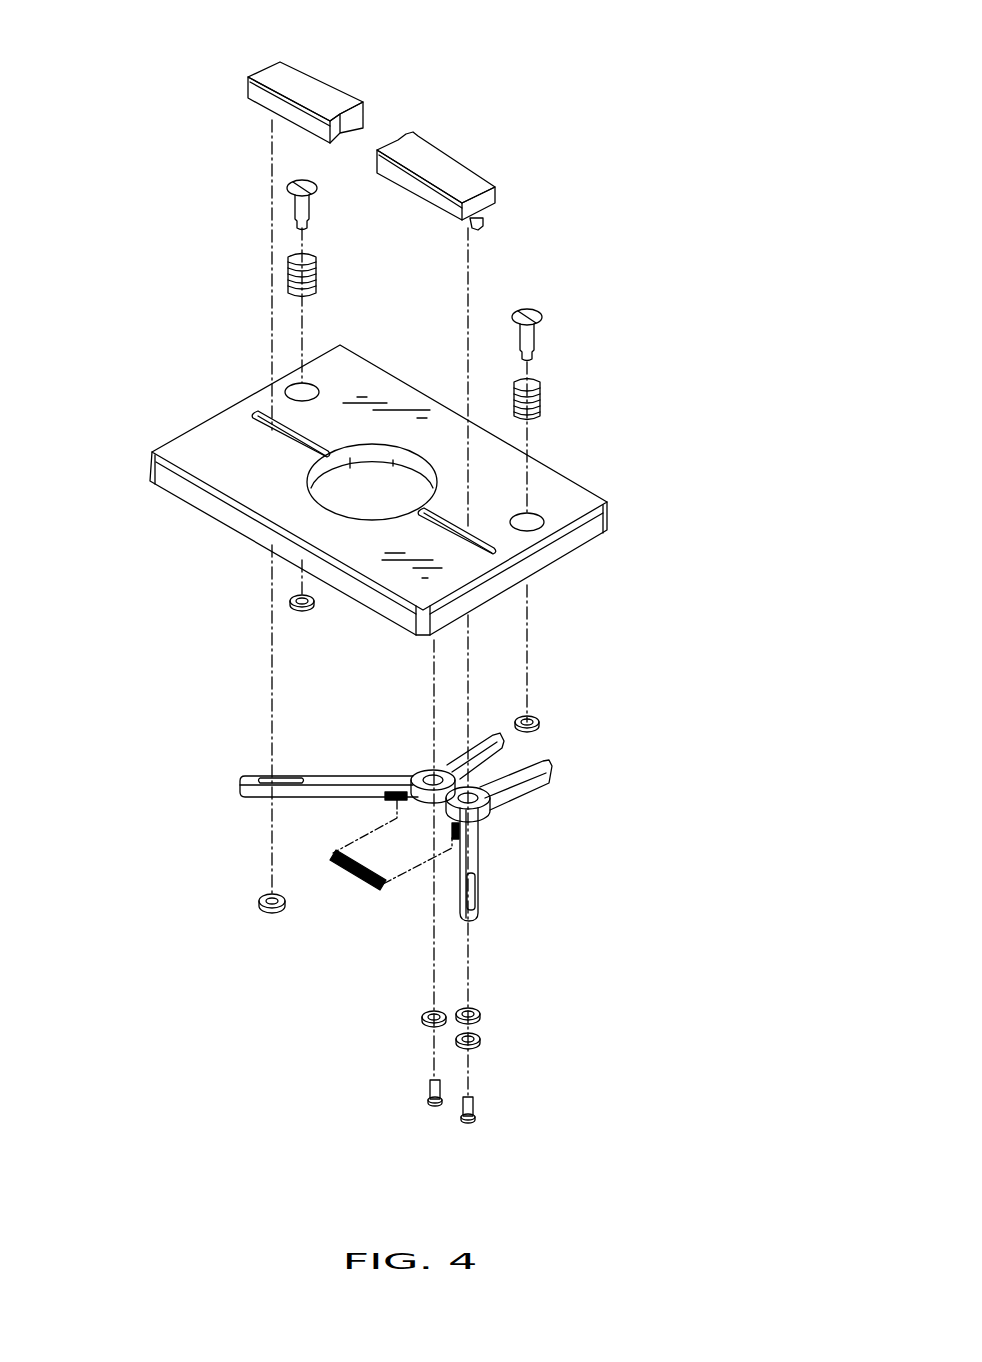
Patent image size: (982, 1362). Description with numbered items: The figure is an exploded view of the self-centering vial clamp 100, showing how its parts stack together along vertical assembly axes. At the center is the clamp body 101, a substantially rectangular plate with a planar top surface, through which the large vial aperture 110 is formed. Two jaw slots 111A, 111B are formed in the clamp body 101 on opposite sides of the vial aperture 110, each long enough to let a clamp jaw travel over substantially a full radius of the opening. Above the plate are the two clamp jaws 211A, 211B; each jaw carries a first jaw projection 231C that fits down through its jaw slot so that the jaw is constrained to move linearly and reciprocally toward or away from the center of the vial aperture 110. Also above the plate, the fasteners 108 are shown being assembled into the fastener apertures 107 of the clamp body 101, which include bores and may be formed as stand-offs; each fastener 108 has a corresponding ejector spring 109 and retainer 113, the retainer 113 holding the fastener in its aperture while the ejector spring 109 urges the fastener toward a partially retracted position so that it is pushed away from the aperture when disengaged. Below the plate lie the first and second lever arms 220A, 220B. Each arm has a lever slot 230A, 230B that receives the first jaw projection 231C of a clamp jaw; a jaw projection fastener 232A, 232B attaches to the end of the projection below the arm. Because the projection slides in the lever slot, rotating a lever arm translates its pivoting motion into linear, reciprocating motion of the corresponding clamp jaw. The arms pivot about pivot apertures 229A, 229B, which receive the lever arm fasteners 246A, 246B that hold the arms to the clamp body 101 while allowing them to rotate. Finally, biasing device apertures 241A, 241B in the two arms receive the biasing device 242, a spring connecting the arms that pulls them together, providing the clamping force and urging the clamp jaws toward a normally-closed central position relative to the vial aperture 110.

The self-centering vial clamp 100 is at (718, 163).
The clamp body 101 is at (153, 483).
The fastener apertures 107 is at (287, 388).
The fasteners 108 is at (291, 203).
The ejector springs 109 is at (287, 280).
The vial aperture 110 is at (318, 497).
The jaw slot 111A is at (250, 423).
The jaw slot 111B is at (500, 550).
The retainers 113 is at (290, 605).
The clamp jaw 211A is at (305, 80).
The clamp jaw 211B is at (436, 152).
The first jaw projection 231C is at (480, 229).
The first lever arm 220A is at (337, 777).
The second lever arm 220B is at (550, 766).
The pivot aperture 229A is at (430, 772).
The pivot aperture 229B is at (491, 805).
The lever slot 230A is at (262, 778).
The lever slot 230B is at (477, 885).
The biasing device aperture 241A is at (397, 802).
The biasing device aperture 241B is at (455, 840).
The biasing device 242 is at (346, 872).
The jaw projection fastener 232A is at (270, 909).
The jaw projection fastener 232B is at (482, 1016).
The lever arm fastener 246A is at (428, 1104).
The lever arm fastener 246B is at (470, 1121).